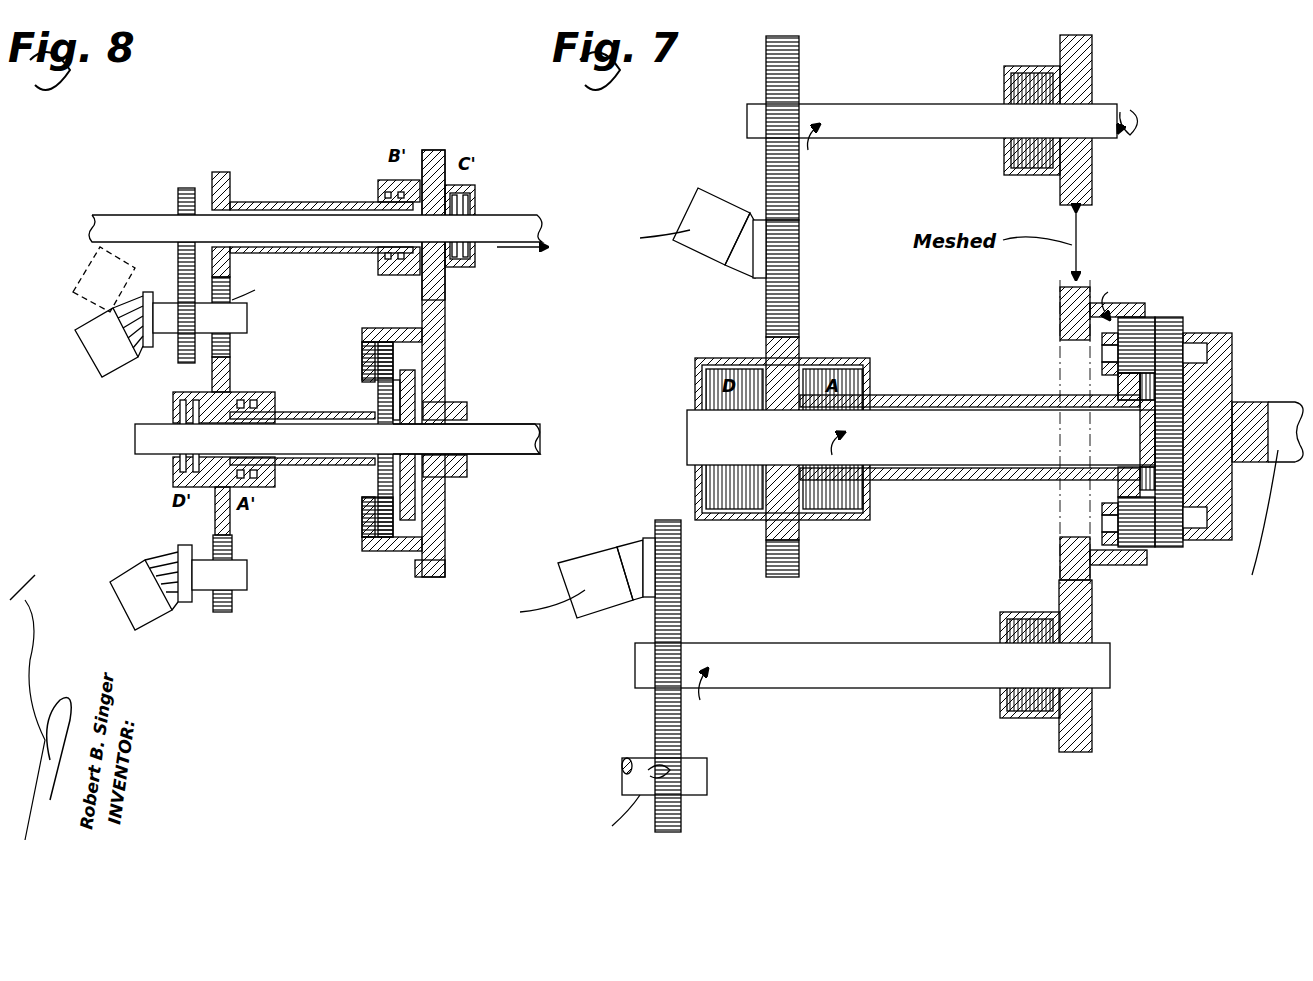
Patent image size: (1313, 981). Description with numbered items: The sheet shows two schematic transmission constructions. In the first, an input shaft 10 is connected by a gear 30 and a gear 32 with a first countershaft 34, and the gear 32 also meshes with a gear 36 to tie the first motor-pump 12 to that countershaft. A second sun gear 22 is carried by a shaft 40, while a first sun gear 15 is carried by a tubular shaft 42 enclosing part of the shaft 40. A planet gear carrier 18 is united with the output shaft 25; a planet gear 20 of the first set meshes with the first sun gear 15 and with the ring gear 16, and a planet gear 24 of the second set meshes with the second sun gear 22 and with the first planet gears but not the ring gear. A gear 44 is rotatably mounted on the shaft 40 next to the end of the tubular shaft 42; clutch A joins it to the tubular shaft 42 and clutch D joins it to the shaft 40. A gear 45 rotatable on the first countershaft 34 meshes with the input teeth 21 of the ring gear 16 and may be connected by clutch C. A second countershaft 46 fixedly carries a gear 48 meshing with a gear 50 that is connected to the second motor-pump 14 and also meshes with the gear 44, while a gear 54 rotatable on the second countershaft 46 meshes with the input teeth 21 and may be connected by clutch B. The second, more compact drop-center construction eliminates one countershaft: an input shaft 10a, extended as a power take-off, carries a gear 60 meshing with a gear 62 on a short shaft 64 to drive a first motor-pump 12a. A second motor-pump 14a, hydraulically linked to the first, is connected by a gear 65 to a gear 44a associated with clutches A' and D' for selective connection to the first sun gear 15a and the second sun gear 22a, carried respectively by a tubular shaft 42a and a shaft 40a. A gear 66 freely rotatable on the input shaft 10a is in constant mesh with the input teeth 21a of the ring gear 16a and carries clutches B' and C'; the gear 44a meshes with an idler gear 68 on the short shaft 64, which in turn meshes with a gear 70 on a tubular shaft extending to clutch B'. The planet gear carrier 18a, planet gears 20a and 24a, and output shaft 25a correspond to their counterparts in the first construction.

In FIG. 7, the input shaft 10 is at (630, 780).
In FIG. 7, the first motor-pump 12 is at (600, 560).
In FIG. 7, the second motor-pump 14 is at (715, 212).
In FIG. 7, the first sun gear 15 is at (1130, 388).
In FIG. 7, the ring gear 16 is at (1140, 312).
In FIG. 7, the planet gear carrier 18 is at (1215, 380).
In FIG. 7, the planet gear 20 is at (1160, 530).
In FIG. 7, the input teeth 21 is at (1062, 292).
In FIG. 7, the second sun gear 22 is at (1160, 440).
In FIG. 7, the planet gear 24 is at (1168, 345).
In FIG. 7, the output shaft 25 is at (1280, 415).
In FIG. 7, the gear 30 is at (668, 758).
In FIG. 7, the gear 32 is at (670, 698).
In FIG. 7, the first countershaft 34 is at (840, 660).
In FIG. 7, the gear 36 is at (670, 582).
In FIG. 7, the shaft 40 is at (921, 437).
In FIG. 7, the tubular shaft 42 is at (962, 395).
In FIG. 7, the gear 44 is at (800, 333).
In FIG. 7, the gear 45 is at (1080, 615).
In FIG. 7, the second countershaft 46 is at (955, 100).
In FIG. 7, the gear 48 is at (785, 78).
In FIG. 7, the gear 50 is at (785, 230).
In FIG. 7, the gear 54 is at (1085, 75).
In FIG. 8, the input shaft 10a is at (152, 215).
In FIG. 8, the first motor-pump 12a is at (105, 370).
In FIG. 8, the second motor-pump 14a is at (128, 628).
In FIG. 8, the first sun gear 15a is at (380, 488).
In FIG. 8, the ring gear 16a is at (390, 328).
In FIG. 8, the planet gear carrier 18a is at (412, 372).
In FIG. 8, the planet gear 20a is at (385, 517).
In FIG. 8, the input teeth 21a is at (445, 315).
In FIG. 8, the second sun gear 22a is at (380, 438).
In FIG. 8, the planet gear 24a is at (385, 517).
In FIG. 8, the output shaft 25a is at (485, 432).
In FIG. 8, the shaft 40a is at (337, 439).
In FIG. 8, the tubular shaft 42a is at (340, 412).
In FIG. 8, the gear 44a is at (230, 368).
In FIG. 8, the gear 60 is at (187, 188).
In FIG. 8, the gear 62 is at (187, 364).
In FIG. 8, the short shaft 64 is at (248, 312).
In FIG. 8, the gear 65 is at (225, 612).
In FIG. 8, the gear 66 is at (435, 155).
In FIG. 8, the idler gear 68 is at (232, 345).
In FIG. 8, the gear 70 is at (225, 175).